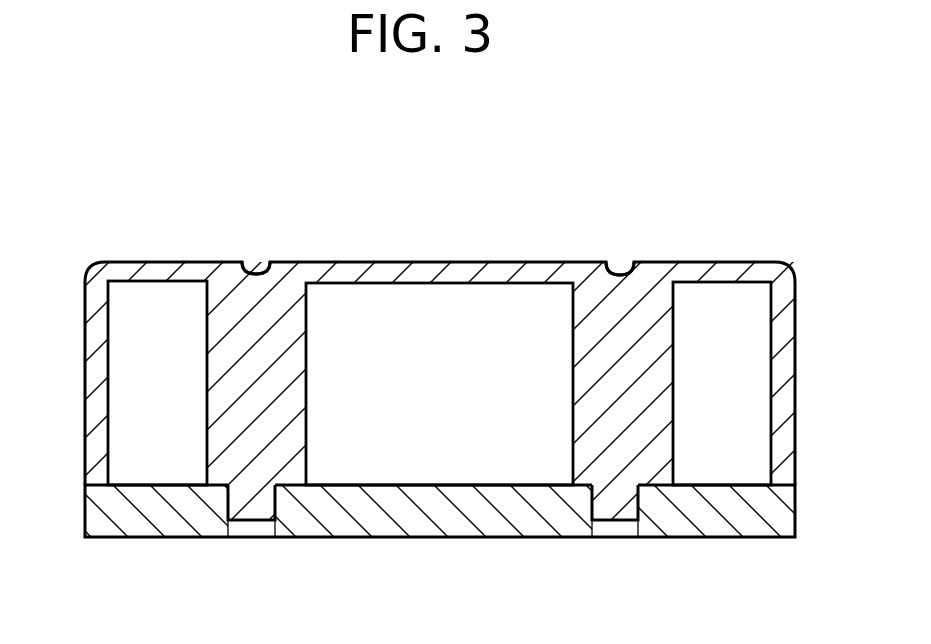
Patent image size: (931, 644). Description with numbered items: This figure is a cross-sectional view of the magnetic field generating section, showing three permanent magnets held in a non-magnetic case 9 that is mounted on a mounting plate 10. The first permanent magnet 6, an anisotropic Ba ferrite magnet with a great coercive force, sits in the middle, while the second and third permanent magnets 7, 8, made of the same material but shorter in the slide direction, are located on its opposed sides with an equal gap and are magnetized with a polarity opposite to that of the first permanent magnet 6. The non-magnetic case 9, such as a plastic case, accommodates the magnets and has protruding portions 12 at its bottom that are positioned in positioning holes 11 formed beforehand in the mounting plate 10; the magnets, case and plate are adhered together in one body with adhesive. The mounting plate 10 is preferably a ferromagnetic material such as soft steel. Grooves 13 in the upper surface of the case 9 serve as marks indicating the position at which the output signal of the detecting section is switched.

The first permanent magnet 6 is at (333, 355).
The second permanent magnet 7 is at (135, 410).
The third permanent magnet 8 is at (758, 400).
The non-magnetic case 9 is at (759, 268).
The mounting plate 10 is at (795, 537).
The positioning holes 11 is at (260, 528).
The protruding portions 12 is at (255, 505).
The grooves 13 is at (262, 273).